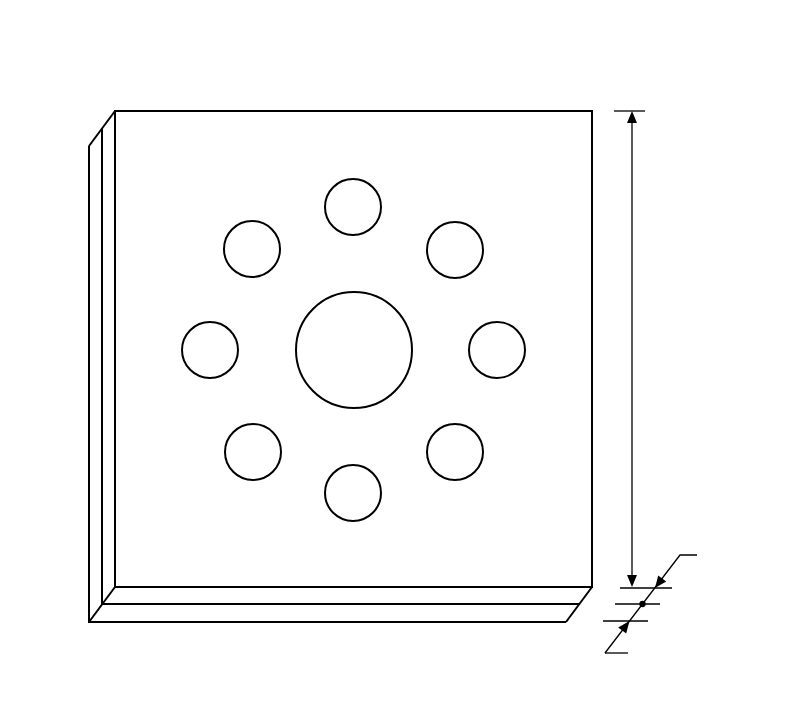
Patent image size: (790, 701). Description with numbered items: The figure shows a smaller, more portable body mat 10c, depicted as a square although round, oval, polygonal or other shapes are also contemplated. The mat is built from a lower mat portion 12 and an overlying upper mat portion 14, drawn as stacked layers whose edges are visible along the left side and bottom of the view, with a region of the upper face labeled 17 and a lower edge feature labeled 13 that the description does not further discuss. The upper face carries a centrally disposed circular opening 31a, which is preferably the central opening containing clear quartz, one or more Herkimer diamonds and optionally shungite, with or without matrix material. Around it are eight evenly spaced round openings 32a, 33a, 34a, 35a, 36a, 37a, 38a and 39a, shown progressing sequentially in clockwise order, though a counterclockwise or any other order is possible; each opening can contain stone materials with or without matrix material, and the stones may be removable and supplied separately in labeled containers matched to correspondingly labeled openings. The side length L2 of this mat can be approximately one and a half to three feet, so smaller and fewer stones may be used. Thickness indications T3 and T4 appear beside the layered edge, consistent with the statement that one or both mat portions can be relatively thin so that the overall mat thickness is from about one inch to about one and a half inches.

The body mat 10c is at (118, 76).
The front face 17 is at (144, 514).
The upper mat portion 14 is at (132, 598).
The lower mat portion 12 is at (193, 613).
The bottom edge 13 is at (278, 628).
The central opening 31a is at (354, 350).
The opening 32a is at (353, 207).
The opening 33a is at (455, 250).
The opening 34a is at (497, 350).
The opening 35a is at (455, 452).
The opening 36a is at (353, 493).
The opening 37a is at (253, 452).
The opening 38a is at (210, 350).
The opening 39a is at (252, 249).
The length L2 is at (630, 349).
The thickness dimension T3 is at (664, 600).
The thickness dimension T4 is at (632, 648).